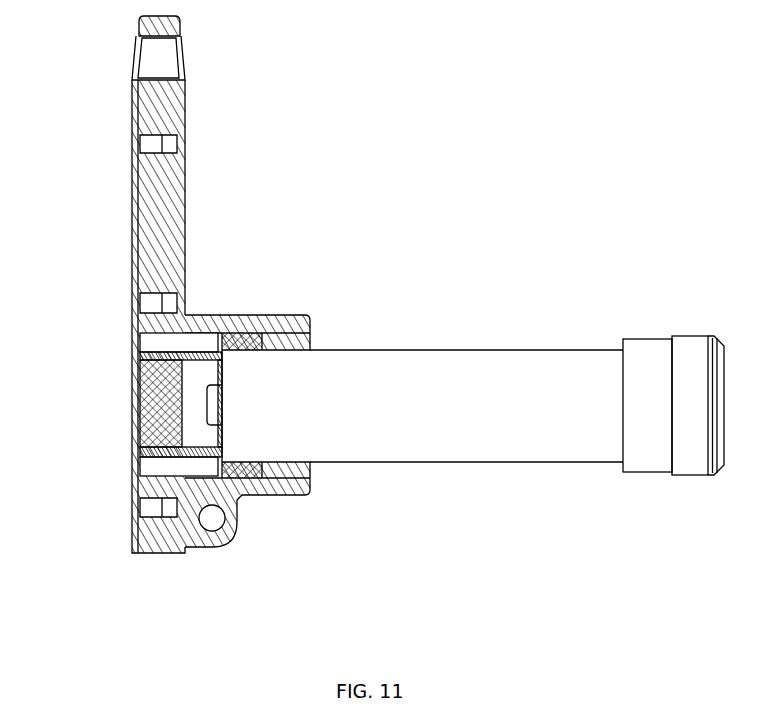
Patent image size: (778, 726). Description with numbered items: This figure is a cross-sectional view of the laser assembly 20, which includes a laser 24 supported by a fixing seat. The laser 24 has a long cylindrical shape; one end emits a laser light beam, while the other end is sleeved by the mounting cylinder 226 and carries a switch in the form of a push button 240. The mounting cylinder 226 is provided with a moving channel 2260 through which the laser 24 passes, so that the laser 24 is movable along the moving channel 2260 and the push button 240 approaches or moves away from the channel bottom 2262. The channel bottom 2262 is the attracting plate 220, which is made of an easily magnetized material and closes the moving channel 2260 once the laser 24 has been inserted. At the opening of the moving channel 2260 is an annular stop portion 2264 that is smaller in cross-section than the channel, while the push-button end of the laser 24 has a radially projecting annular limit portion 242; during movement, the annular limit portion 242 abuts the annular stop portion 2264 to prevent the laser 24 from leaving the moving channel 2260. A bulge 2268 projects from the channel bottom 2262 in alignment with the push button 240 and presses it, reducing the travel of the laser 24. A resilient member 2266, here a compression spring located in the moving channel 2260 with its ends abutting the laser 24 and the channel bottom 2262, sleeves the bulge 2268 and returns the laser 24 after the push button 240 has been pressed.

The laser assembly 20 is at (608, 96).
The attracting plate 220 is at (132, 206).
The mounting cylinder 226 is at (297, 318).
The annular limit portion 242 is at (252, 494).
The annular stop portion 2264 is at (305, 495).
The channel bottom 2262 is at (133, 368).
The resilient member 2266 is at (133, 452).
The push button 240 is at (213, 385).
The bulge 2268 is at (132, 402).
The moving channel 2260 is at (189, 342).
The laser 24 is at (472, 383).